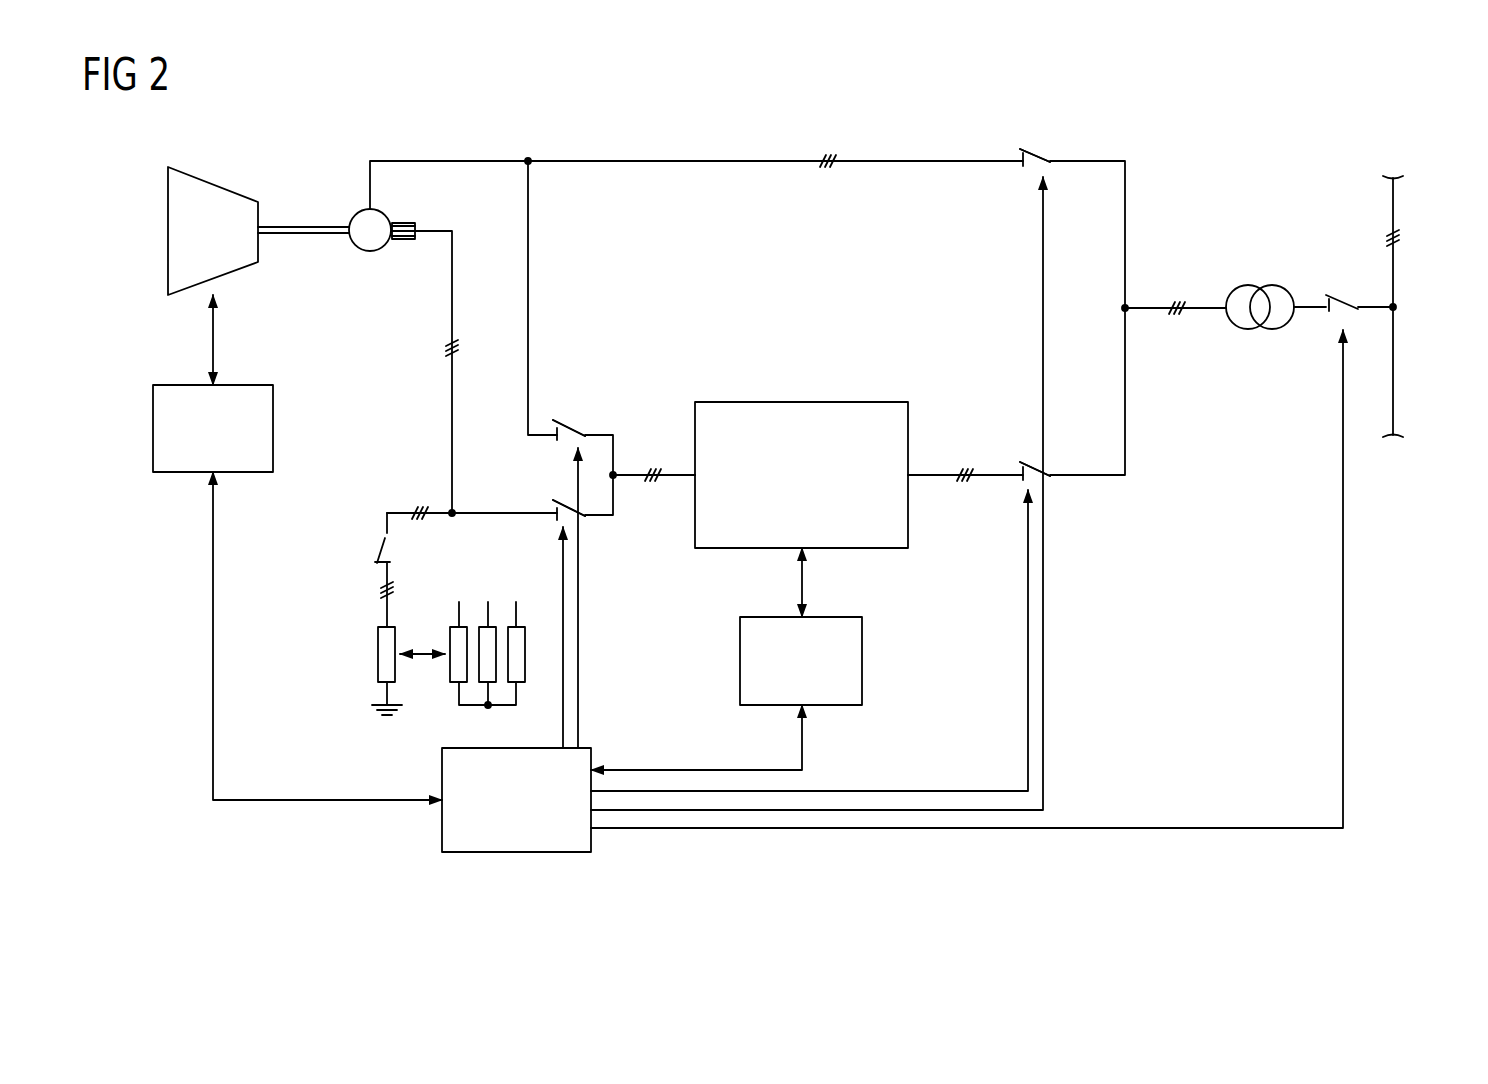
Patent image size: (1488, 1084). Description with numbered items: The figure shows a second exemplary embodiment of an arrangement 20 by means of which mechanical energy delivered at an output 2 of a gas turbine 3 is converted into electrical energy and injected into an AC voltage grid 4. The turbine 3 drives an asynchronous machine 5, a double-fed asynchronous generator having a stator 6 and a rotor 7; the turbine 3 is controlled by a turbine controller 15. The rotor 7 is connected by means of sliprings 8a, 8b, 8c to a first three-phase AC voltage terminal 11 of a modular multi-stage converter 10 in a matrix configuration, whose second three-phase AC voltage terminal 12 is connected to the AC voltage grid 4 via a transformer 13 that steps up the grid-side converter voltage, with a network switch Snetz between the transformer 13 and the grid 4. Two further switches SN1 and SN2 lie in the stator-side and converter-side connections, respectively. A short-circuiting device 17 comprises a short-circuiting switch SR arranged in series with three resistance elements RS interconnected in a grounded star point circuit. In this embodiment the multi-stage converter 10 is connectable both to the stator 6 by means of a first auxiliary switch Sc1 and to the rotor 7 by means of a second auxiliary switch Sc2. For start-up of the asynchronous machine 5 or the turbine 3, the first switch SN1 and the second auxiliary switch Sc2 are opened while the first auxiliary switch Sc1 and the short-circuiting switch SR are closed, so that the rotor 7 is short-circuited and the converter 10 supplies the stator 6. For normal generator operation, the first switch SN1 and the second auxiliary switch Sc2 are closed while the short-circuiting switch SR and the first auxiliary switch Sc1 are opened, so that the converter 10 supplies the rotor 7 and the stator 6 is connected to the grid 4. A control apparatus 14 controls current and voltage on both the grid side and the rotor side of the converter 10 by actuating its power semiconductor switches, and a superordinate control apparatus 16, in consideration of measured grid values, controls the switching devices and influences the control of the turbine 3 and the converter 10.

The output 2 is at (279, 235).
The turbine 3 is at (220, 190).
The AC voltage grid 4 is at (1394, 205).
The asynchronous machine 5 is at (345, 297).
The stator 6 is at (371, 252).
The rotor 7 is at (441, 192).
The slipring 8a is at (400, 221).
The slipring 8b is at (413, 221).
The slipring 8c is at (406, 241).
The multi-stage converter 10 is at (802, 402).
The first three-phase AC voltage terminal 11 is at (695, 475).
The second three-phase AC voltage terminal 12 is at (908, 475).
The transformer 13 is at (1262, 282).
The control apparatus 14 is at (740, 660).
The turbine controller 15 is at (153, 428).
The superordinate control apparatus 16 is at (517, 853).
The short-circuiting device 17 is at (393, 614).
The arrangement 20 is at (941, 870).
The first switch SN1 is at (1040, 140).
The second switch SN2 is at (1030, 450).
The first auxiliary switch Sc1 is at (579, 412).
The second auxiliary switch Sc2 is at (594, 528).
The short-circuiting switch SR is at (360, 560).
The resistance elements RS is at (378, 661).
The network switch Snetz is at (1350, 290).